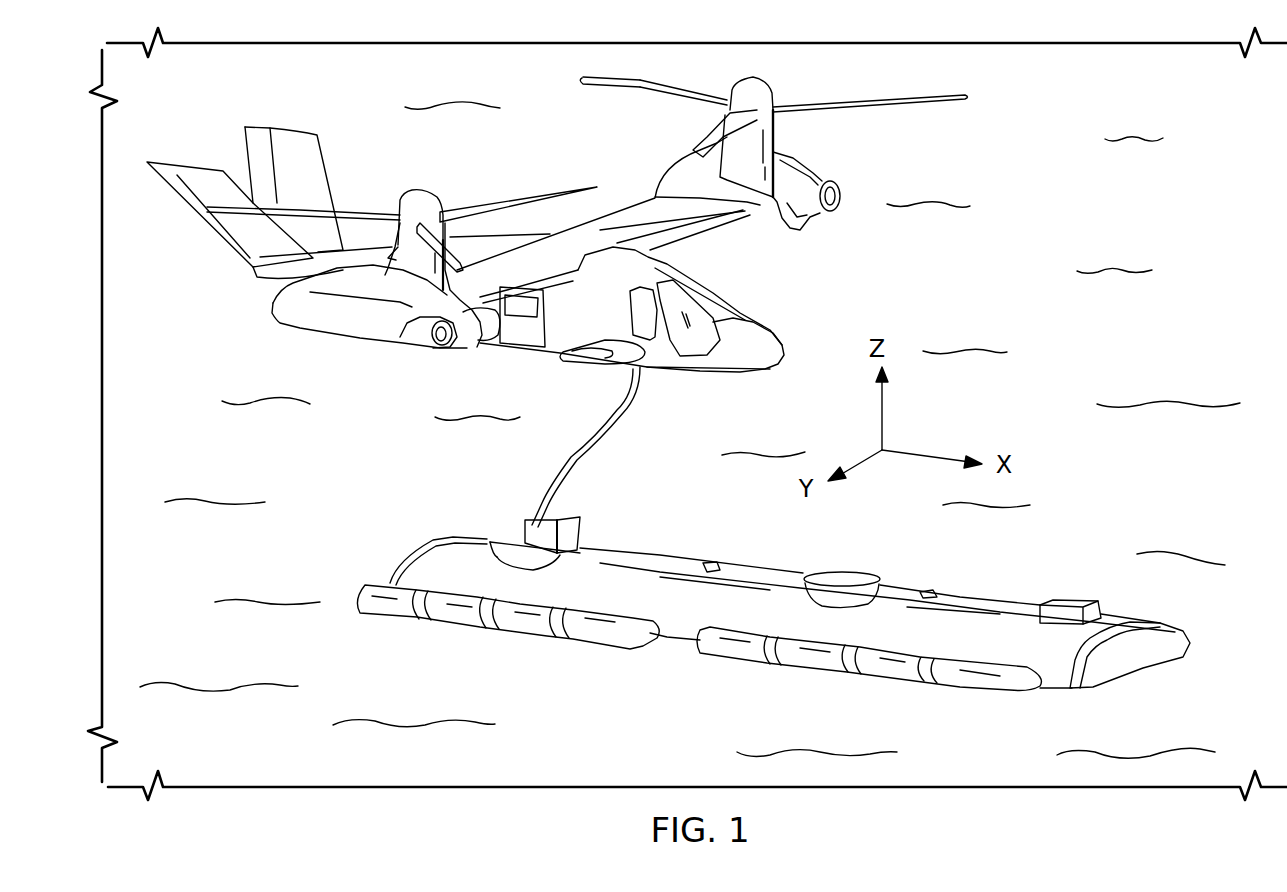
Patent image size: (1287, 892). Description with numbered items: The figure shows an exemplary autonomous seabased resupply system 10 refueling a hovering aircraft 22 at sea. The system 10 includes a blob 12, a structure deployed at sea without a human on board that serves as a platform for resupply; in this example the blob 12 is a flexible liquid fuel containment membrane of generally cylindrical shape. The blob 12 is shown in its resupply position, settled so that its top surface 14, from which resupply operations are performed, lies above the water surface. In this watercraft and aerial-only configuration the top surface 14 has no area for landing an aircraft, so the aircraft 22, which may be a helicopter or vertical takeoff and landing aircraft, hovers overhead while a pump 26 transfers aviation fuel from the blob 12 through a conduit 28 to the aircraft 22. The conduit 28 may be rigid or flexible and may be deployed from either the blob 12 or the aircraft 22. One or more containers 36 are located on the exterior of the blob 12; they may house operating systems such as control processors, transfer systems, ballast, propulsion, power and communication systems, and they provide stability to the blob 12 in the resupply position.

The autonomous seabased resupply system 10 is at (1026, 170).
The blob 12 is at (1143, 660).
The top surface 14 is at (1022, 620).
The hovering aircraft 22 is at (758, 319).
The pump 26 is at (580, 530).
The conduit 28 is at (617, 440).
The container 36 is at (593, 637).